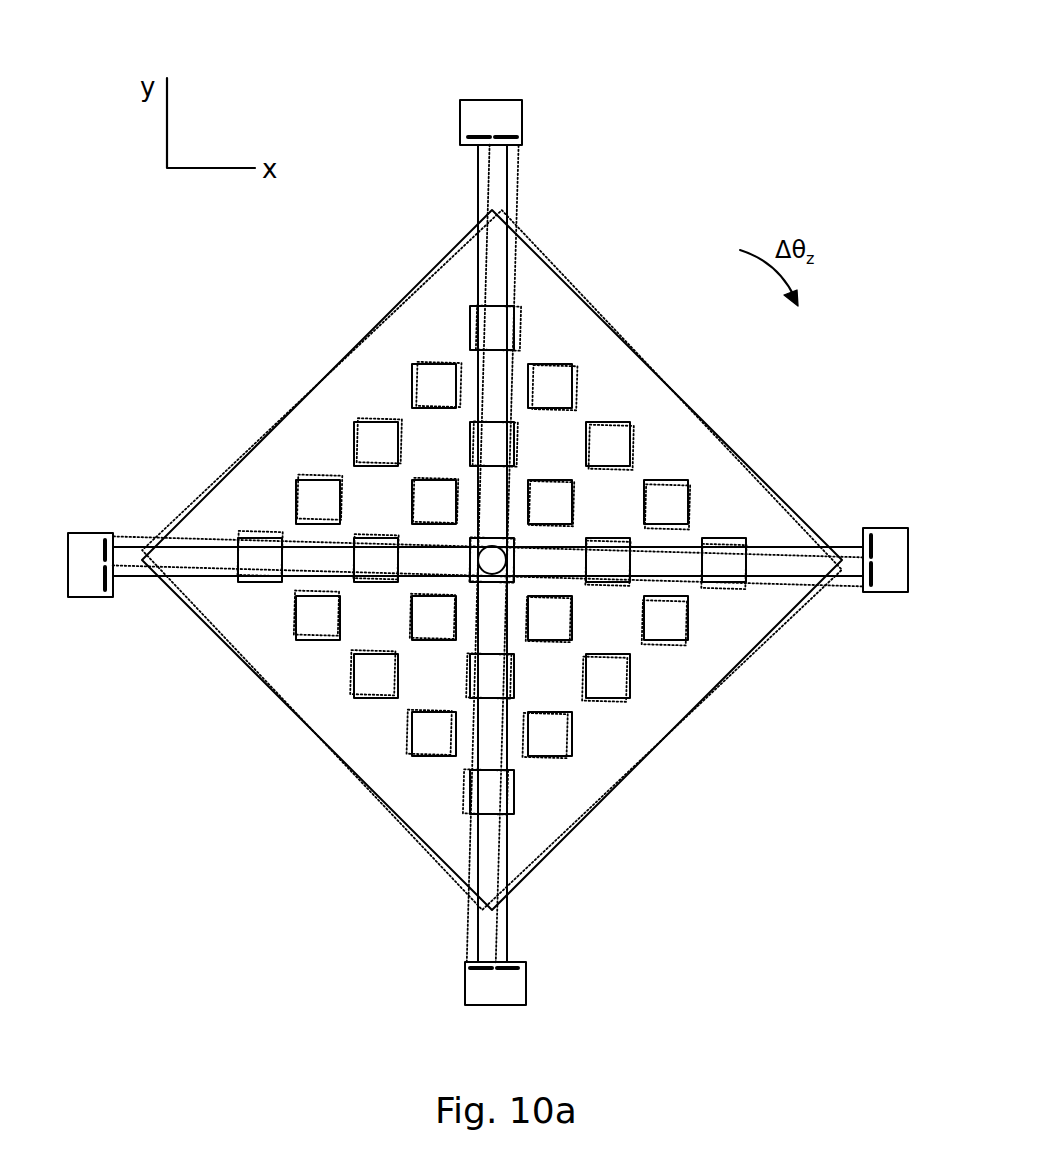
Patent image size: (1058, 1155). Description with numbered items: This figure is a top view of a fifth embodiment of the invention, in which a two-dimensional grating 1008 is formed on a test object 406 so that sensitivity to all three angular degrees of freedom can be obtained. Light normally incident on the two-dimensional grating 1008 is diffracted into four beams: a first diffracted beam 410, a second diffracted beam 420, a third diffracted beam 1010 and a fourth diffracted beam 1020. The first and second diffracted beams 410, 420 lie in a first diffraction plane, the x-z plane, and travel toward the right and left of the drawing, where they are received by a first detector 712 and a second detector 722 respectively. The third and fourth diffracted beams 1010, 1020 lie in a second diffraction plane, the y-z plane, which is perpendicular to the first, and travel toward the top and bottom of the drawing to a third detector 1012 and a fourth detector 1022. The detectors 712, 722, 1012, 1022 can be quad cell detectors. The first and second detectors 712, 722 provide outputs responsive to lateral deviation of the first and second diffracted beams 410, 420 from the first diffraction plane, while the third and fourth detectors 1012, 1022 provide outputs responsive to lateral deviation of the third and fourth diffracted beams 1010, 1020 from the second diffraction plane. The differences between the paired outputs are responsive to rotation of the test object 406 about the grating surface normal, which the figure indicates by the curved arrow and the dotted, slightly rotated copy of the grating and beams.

The test object 406 is at (325, 374).
The first diffracted beam 410 is at (790, 546).
The second diffracted beam 420 is at (131, 580).
The second detector 722 is at (82, 533).
The first detector 712 is at (897, 592).
The 2-D grating 1008 is at (658, 712).
The third diffracted beam 1010 is at (476, 193).
The third detector 1012 is at (491, 100).
The fourth diffracted beam 1020 is at (510, 918).
The fourth detector 1022 is at (465, 967).